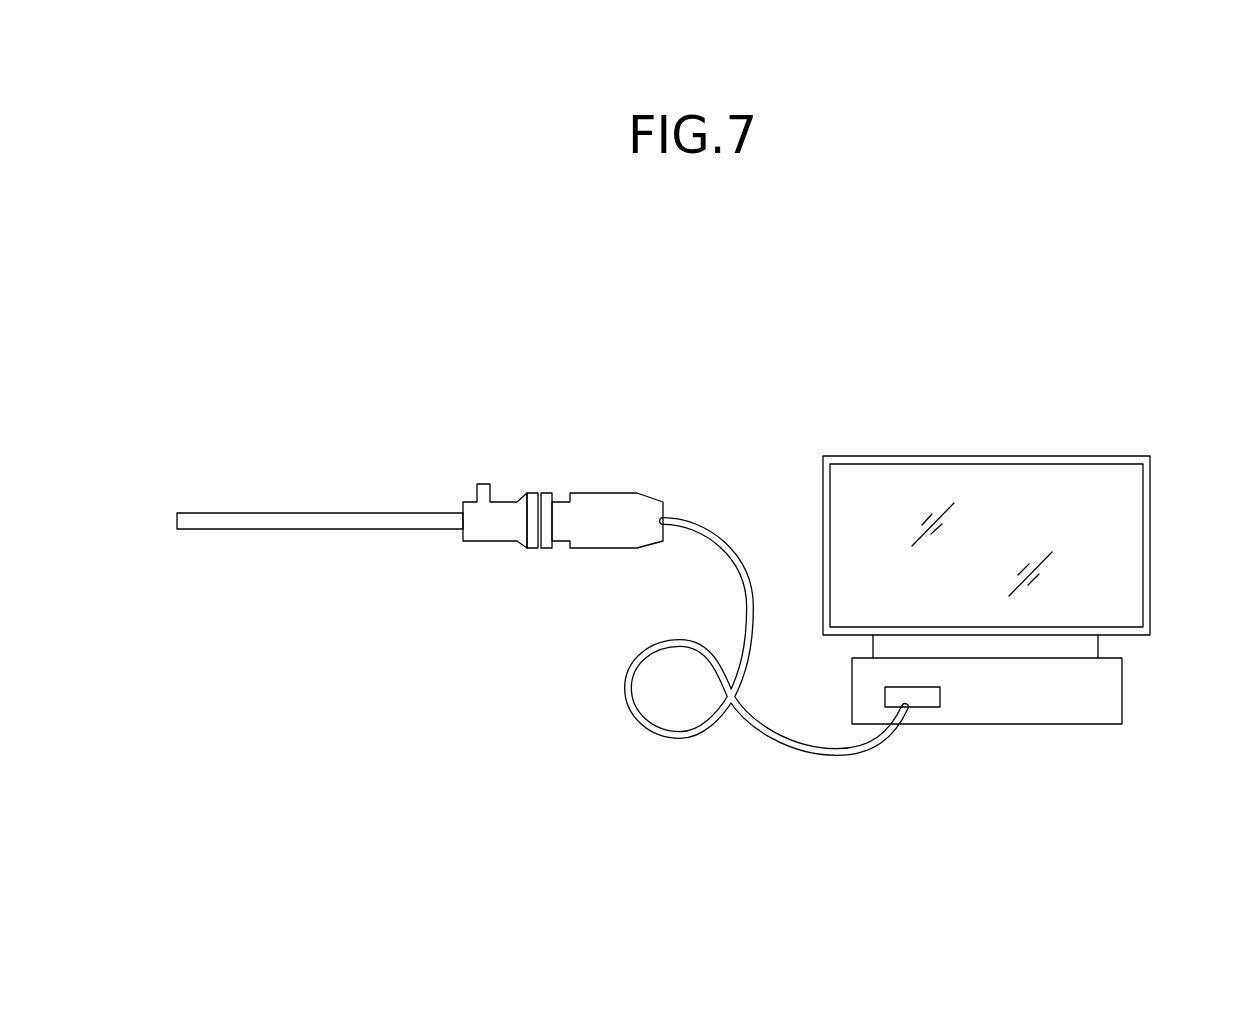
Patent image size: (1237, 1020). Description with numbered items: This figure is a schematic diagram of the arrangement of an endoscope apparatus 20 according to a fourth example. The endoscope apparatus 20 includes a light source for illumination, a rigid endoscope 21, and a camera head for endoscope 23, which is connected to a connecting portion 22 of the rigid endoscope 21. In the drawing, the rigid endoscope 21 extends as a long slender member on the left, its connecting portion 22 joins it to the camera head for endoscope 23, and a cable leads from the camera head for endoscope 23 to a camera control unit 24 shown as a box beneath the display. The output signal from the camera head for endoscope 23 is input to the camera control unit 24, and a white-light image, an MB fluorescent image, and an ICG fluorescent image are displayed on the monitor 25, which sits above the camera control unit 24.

The endoscope apparatus 20 is at (694, 519).
The rigid endoscope 21 is at (328, 512).
The connecting portion 22 is at (535, 493).
The camera head for endoscope 23 is at (583, 532).
The camera control unit 24 is at (1107, 692).
The monitor 25 is at (1088, 456).